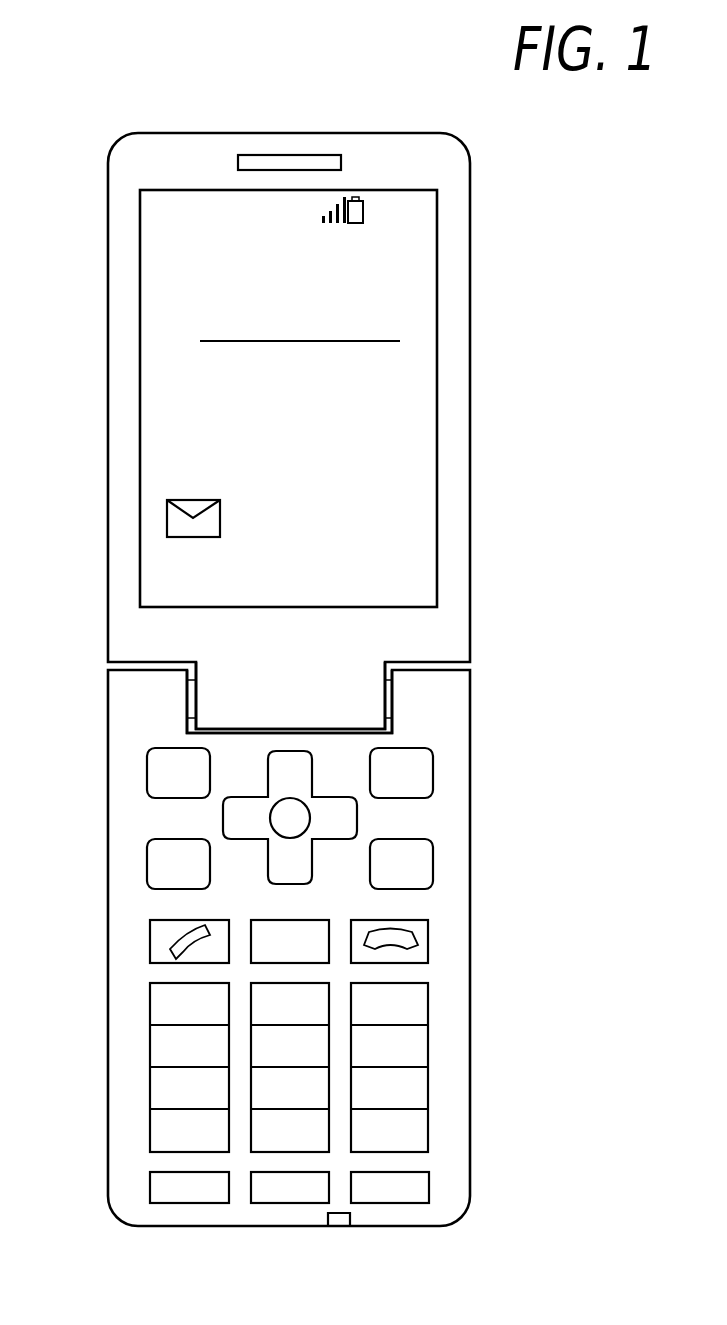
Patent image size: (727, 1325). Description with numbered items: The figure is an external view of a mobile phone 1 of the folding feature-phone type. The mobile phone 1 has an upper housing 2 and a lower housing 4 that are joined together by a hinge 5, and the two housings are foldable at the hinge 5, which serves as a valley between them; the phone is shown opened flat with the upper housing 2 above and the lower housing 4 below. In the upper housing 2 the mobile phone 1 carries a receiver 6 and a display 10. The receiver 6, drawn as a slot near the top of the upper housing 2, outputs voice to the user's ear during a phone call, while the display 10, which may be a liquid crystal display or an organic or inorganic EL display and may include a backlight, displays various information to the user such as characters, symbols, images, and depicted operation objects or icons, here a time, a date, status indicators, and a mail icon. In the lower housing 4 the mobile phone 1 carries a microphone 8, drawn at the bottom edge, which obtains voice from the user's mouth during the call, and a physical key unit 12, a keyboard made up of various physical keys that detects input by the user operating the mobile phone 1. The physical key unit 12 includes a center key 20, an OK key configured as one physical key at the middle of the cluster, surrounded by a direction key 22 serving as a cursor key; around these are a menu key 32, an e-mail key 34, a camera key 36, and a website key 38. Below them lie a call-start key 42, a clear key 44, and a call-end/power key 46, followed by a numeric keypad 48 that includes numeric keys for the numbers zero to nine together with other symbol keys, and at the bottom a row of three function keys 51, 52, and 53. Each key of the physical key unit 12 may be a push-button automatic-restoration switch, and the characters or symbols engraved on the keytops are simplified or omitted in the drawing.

The mobile phone 1 is at (340, 60).
The upper housing 2 is at (385, 133).
The lower housing 4 is at (405, 1227).
The hinge 5 is at (387, 682).
The receiver 6 is at (296, 162).
The microphone 8 is at (338, 1227).
The display 10 is at (437, 380).
The physical key unit 12 is at (540, 765).
The center key 20 is at (285, 818).
The direction key 22 is at (345, 822).
The menu key 32 is at (157, 770).
The e-mail key 34 is at (157, 860).
The camera key 36 is at (423, 772).
The website key 38 is at (423, 862).
The call-start key 42 is at (160, 940).
The clear key 44 is at (312, 921).
The call-end/power key 46 is at (412, 940).
The numeric keypad 48 is at (420, 1003).
The function key 51 is at (160, 1188).
The function key 52 is at (288, 1204).
The function key 53 is at (420, 1187).